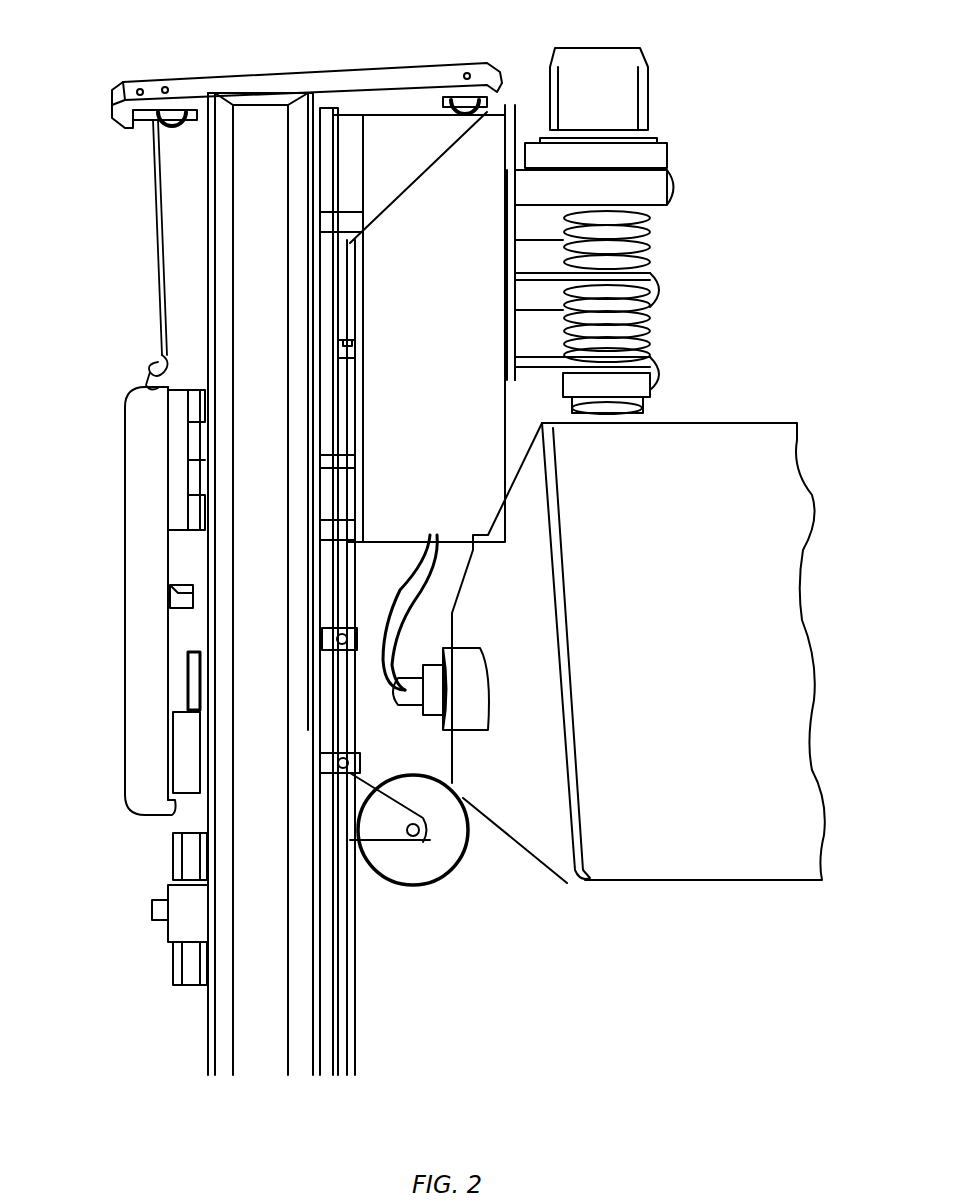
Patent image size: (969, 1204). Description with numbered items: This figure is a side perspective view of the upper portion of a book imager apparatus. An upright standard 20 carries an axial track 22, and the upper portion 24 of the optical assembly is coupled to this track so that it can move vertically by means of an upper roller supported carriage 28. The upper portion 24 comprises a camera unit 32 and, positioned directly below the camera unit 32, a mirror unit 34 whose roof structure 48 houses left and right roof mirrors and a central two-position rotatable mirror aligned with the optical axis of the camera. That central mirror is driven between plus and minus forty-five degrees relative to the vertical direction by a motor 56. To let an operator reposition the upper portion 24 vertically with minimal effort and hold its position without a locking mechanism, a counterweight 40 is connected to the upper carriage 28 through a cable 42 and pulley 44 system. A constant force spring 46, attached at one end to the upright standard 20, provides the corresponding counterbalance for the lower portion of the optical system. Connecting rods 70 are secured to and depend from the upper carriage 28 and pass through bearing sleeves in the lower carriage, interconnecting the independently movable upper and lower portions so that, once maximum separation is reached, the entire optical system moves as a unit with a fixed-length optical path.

The upright standard 20 is at (258, 330).
The axial track 22 is at (333, 143).
The upper portion of the optical assembly 24 is at (672, 272).
The upper roller supported carriage 28 is at (347, 248).
The camera unit 32 is at (640, 180).
The mirror unit 34 is at (718, 418).
The counterweight 40 is at (133, 573).
The cable 42 is at (157, 228).
The pulley 44 is at (172, 113).
The constant force spring 46 is at (428, 868).
The roof structure 48 is at (765, 628).
The motor 56 is at (470, 672).
The connecting rods 70 is at (350, 727).